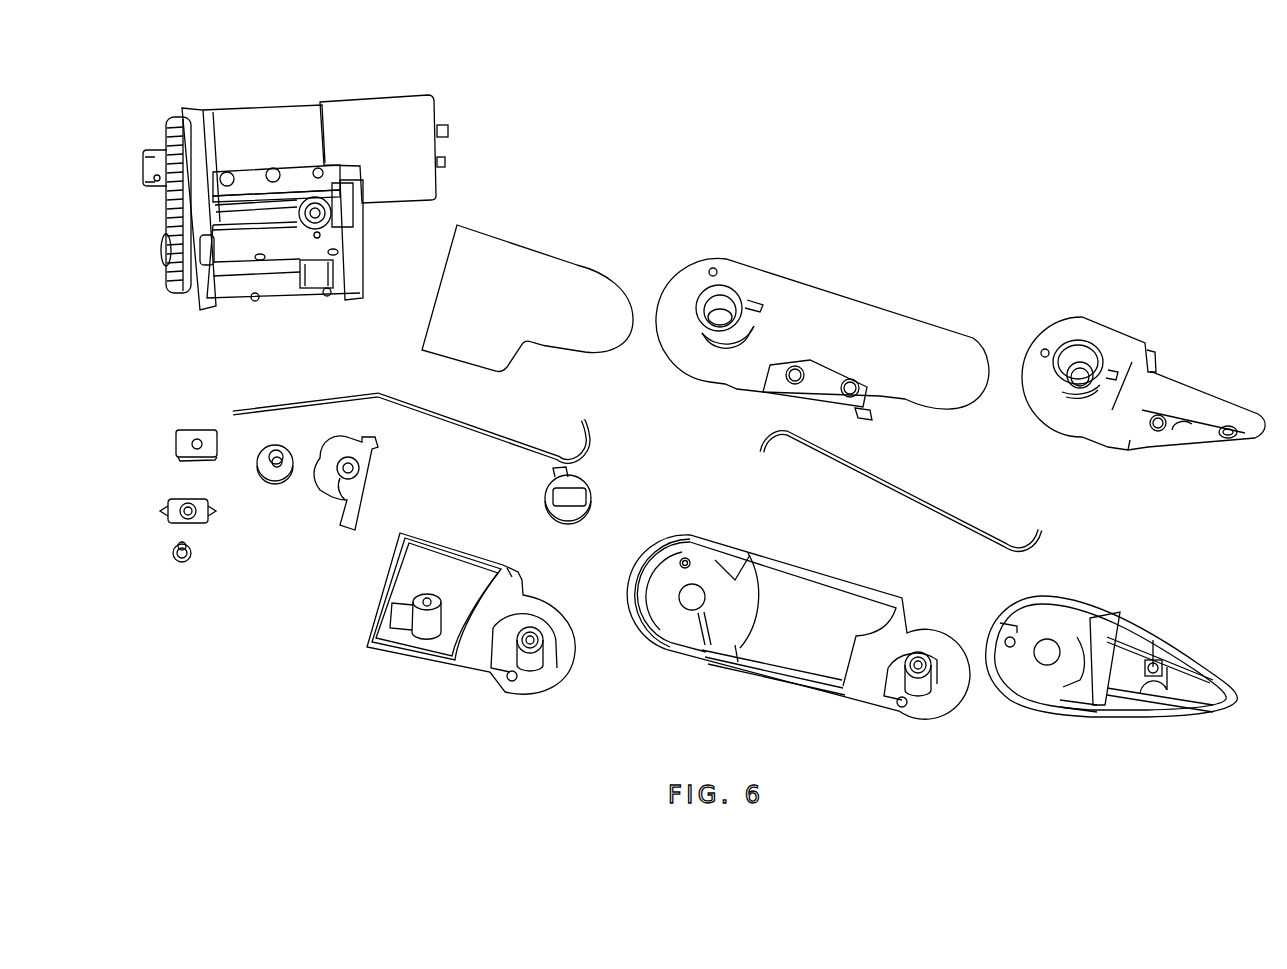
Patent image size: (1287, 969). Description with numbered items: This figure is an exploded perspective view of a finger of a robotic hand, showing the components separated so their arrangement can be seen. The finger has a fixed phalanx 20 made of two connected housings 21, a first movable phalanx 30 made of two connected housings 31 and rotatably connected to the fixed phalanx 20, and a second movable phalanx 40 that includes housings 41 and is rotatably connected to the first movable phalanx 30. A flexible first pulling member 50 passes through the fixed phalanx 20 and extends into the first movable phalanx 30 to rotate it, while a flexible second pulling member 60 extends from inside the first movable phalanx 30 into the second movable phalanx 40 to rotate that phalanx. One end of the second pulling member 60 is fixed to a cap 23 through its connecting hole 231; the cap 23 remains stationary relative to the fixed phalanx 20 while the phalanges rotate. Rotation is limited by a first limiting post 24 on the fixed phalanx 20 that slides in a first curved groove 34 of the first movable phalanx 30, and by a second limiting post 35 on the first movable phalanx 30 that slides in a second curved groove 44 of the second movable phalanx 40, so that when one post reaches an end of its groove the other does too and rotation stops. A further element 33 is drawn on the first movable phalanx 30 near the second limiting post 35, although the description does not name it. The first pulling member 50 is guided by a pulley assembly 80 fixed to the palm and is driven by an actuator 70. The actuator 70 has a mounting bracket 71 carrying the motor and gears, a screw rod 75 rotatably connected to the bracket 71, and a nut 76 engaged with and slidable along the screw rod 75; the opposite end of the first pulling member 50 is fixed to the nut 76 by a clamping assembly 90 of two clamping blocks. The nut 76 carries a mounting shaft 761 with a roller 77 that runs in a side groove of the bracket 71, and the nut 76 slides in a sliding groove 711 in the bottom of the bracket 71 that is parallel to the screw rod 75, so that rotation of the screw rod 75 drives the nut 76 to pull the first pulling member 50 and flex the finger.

The actuator 70 is at (444, 123).
The bracket 71 is at (237, 298).
The sliding groove 711 is at (272, 278).
The screw rod 75 is at (243, 230).
The nut 76 is at (327, 293).
The mounting shaft 761 is at (331, 213).
The roller 77 is at (300, 218).
The housing 21 is at (497, 265).
The fixed phalanx 20 is at (467, 673).
The first limiting post 24 is at (512, 682).
The cap 23 is at (545, 503).
The connecting hole 231 is at (549, 476).
The first movable phalanx 30 is at (813, 642).
The housing 31 is at (869, 340).
The boss 33 is at (918, 680).
The first curved groove 34 is at (758, 305).
The second limiting post 35 is at (893, 702).
The second movable phalanx 40 is at (1118, 604).
The housing 41 is at (1178, 393).
The second curved groove 44 is at (1110, 410).
The first pulling member 50 is at (407, 410).
The second pulling member 60 is at (894, 492).
The pulley assembly 80 is at (313, 506).
The clamping assembly 90 is at (186, 428).